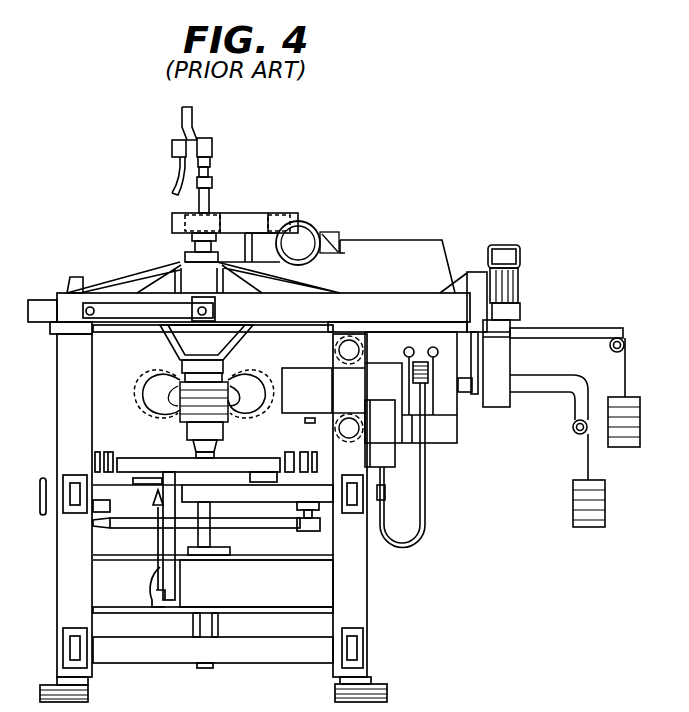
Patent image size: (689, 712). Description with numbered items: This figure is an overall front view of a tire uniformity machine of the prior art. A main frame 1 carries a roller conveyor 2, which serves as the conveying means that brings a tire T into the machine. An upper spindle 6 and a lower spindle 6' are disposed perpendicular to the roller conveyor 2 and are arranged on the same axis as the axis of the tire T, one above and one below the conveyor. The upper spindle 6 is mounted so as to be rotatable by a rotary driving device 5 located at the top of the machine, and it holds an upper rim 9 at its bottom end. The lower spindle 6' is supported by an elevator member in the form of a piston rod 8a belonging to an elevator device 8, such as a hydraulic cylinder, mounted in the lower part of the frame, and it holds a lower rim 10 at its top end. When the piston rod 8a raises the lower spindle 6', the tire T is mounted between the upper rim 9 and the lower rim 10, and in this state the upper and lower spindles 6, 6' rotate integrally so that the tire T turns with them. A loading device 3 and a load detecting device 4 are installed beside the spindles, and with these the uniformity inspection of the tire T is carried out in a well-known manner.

The main frame 1 is at (57, 586).
The roller conveyor 2 is at (126, 458).
The loading device 3 is at (308, 368).
The load detecting device 4 is at (354, 340).
The rotary driving device 5 is at (317, 232).
The upper spindle 6 is at (161, 377).
The lower spindle 6' is at (183, 440).
The elevator device 8 is at (218, 625).
The elevator member (piston rod) 8a is at (210, 505).
The upper rim 9 is at (236, 372).
The lower rim 10 is at (233, 406).
The tire T is at (134, 372).